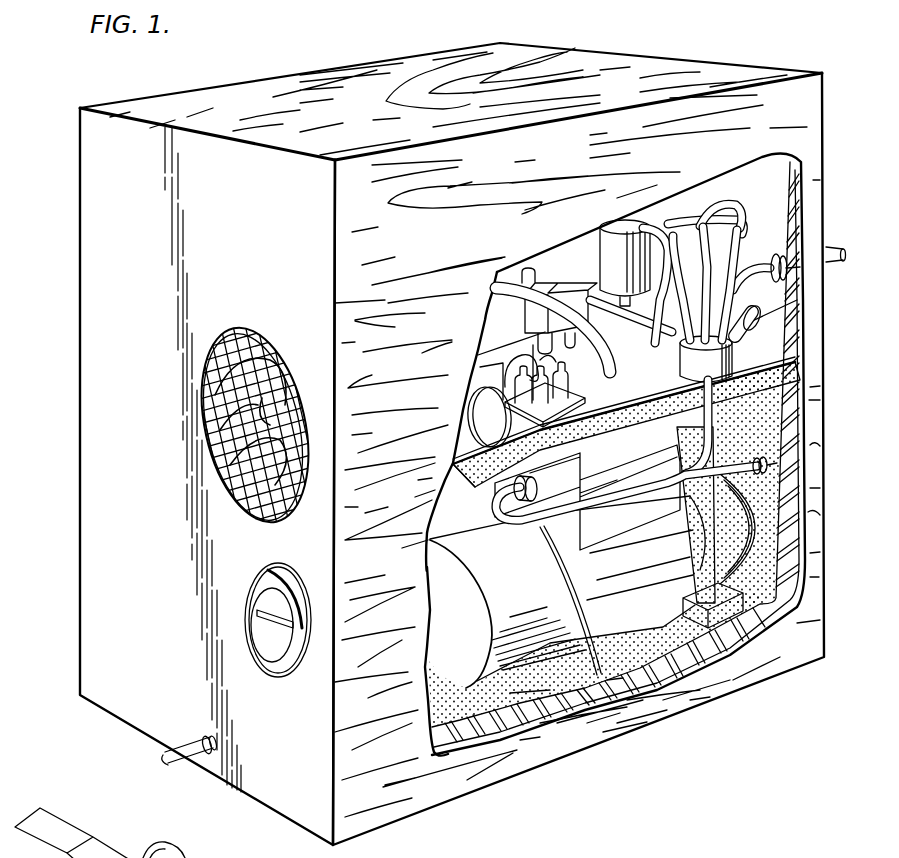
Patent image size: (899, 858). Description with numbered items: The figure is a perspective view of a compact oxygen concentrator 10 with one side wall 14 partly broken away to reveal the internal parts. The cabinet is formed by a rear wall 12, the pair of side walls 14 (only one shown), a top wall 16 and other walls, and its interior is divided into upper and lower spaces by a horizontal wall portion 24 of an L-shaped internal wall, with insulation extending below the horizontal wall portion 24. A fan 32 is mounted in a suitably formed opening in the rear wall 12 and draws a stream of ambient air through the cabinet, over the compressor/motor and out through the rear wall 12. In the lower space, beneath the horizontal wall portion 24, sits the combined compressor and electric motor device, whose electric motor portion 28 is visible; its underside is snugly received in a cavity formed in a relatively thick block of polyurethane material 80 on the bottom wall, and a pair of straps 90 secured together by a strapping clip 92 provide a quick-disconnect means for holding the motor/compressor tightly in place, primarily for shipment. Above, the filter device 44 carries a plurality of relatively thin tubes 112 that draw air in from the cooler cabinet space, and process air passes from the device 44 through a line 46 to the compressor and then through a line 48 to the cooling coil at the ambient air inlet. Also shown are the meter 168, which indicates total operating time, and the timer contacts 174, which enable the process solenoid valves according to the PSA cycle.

The compact oxygen concentrator 10 is at (44, 178).
The rear wall 12 is at (258, 231).
The side wall 14 is at (438, 245).
The top wall 16 is at (372, 120).
The horizontal wall portion 24 is at (773, 350).
The electric motor portion 28 is at (527, 592).
The fan 32 is at (262, 398).
The device 44 is at (683, 367).
The line 46 is at (597, 503).
The line 48 is at (725, 477).
The block of polyurethane material 80 is at (683, 620).
The straps 90 is at (77, 830).
The strapping clip 92 is at (218, 851).
The tubes 112 is at (718, 222).
The meter 168 is at (262, 598).
The contacts 174 is at (503, 423).